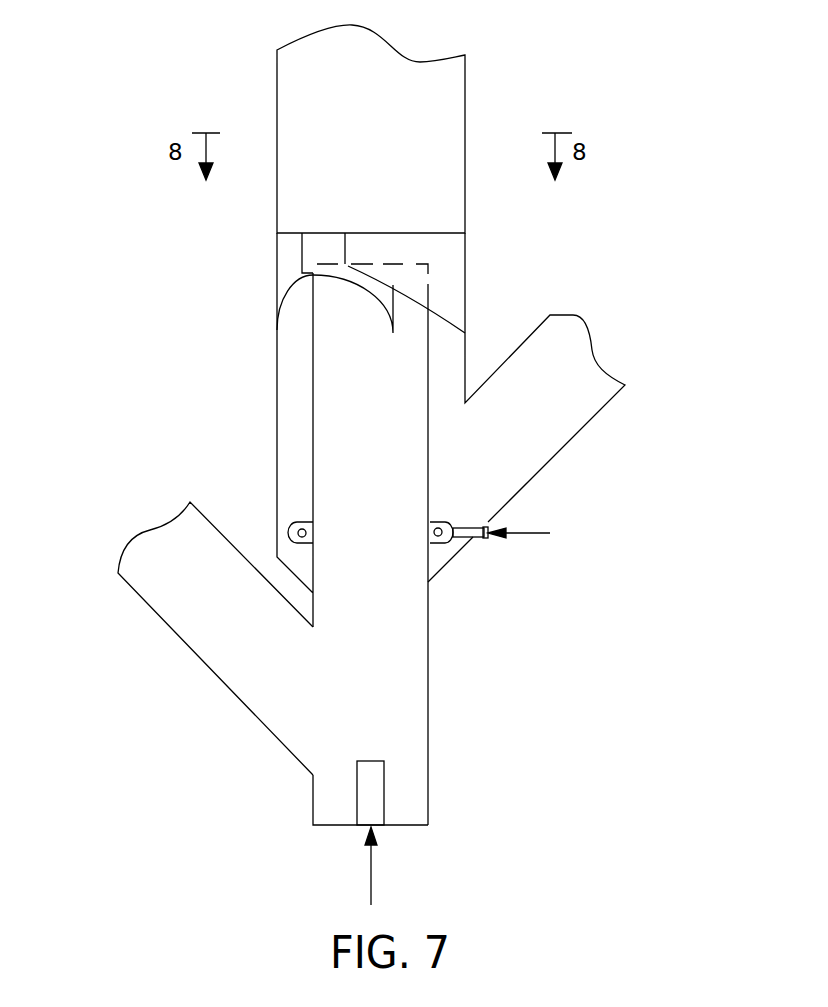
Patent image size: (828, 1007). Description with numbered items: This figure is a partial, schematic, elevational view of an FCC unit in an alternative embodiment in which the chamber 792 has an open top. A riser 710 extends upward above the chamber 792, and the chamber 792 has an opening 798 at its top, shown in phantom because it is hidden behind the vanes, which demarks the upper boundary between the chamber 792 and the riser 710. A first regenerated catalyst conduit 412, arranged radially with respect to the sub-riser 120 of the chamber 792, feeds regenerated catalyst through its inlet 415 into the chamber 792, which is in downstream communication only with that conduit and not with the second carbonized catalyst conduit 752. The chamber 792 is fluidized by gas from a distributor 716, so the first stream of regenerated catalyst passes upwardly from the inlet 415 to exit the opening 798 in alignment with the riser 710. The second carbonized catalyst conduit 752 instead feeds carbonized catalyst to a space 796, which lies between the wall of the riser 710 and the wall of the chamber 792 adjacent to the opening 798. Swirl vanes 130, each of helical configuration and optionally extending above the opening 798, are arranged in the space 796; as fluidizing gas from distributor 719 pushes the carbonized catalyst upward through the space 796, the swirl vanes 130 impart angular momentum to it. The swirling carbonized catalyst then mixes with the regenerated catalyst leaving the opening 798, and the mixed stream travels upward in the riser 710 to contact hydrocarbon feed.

The riser 710 is at (277, 95).
The opening 798 is at (382, 264).
The swirl vanes 130 is at (313, 248).
The space 796 is at (290, 423).
The chamber 792 is at (413, 470).
The second carbonized catalyst conduit 752 is at (537, 325).
The distributor 719 is at (435, 545).
The first regenerated catalyst conduit 412 is at (170, 629).
The inlet 415 is at (318, 684).
The sub-riser 120 is at (428, 688).
The distributor 716 is at (372, 806).